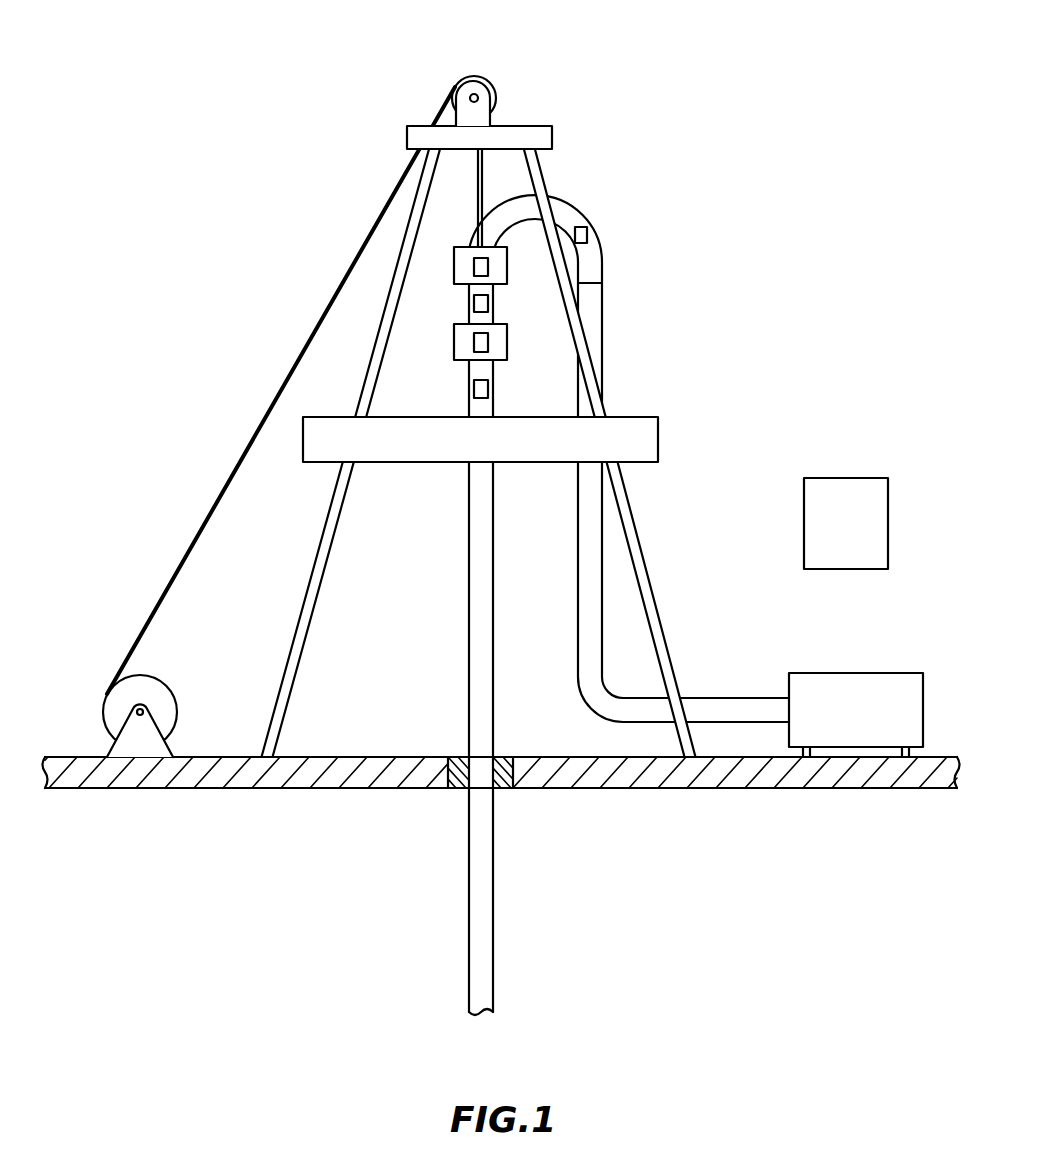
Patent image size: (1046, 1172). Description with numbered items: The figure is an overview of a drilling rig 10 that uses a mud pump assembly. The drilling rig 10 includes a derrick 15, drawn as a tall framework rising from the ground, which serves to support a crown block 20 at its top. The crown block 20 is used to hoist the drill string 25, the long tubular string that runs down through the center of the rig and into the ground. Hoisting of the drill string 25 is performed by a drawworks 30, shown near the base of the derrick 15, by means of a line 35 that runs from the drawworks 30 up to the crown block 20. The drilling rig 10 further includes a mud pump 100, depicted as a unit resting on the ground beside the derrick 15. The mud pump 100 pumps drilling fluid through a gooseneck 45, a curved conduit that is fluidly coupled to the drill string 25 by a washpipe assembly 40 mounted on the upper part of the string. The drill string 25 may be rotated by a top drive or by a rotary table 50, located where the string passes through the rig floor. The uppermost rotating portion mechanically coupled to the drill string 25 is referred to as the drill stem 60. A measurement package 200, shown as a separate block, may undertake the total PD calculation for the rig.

The drilling rig 10 is at (170, 247).
The derrick 15 is at (537, 165).
The crown block 20 is at (492, 83).
The drill string 25 is at (467, 657).
The drawworks 30 is at (152, 683).
The line 35 is at (200, 535).
The washpipe assembly 40 is at (440, 296).
The gooseneck 45 is at (593, 256).
The rotary table 50 is at (452, 788).
The drill stem 60 is at (497, 390).
The mud pump 100 is at (878, 673).
The measurement package 200 is at (824, 536).